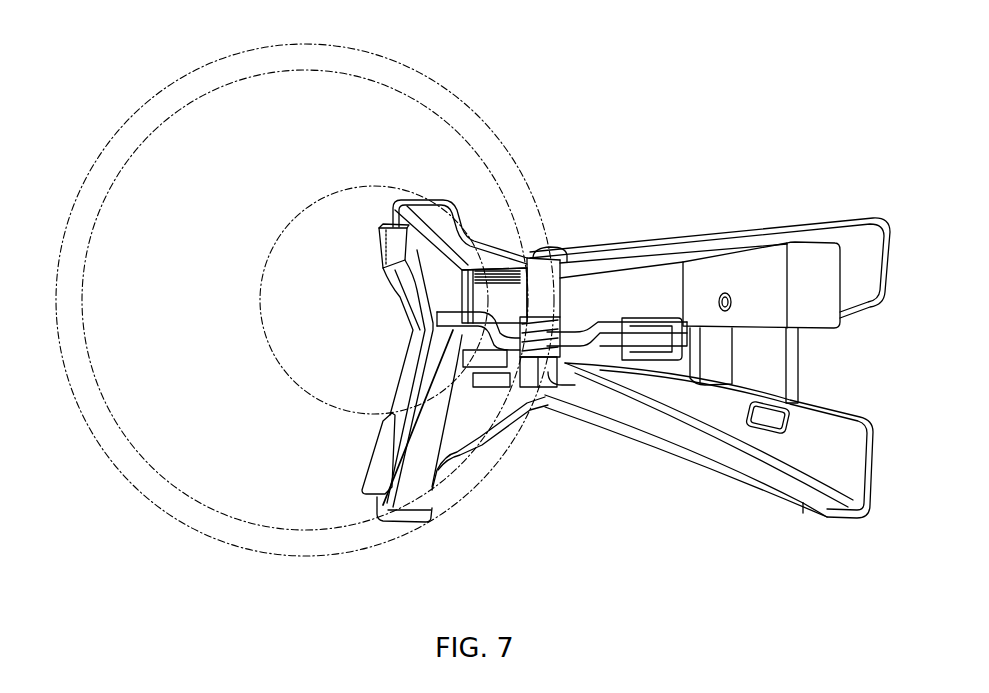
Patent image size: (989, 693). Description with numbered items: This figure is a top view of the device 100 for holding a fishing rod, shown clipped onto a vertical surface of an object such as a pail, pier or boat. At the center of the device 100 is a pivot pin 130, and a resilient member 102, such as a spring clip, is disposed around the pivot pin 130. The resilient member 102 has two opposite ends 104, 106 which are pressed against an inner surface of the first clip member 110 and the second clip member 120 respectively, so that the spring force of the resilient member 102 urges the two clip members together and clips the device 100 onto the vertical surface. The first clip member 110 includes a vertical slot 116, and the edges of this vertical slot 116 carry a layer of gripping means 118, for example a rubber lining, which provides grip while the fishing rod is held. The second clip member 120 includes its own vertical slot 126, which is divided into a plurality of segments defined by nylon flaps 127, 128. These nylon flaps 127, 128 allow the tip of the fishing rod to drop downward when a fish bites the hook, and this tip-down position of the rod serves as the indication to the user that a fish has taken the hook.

The device 100 is at (627, 107).
The resilient member 102 is at (550, 322).
The first end of resilient member 104 is at (450, 333).
The second end of resilient member 106 is at (688, 342).
The first clip member 110 is at (460, 222).
The vertical slot of first clip member 116 is at (393, 328).
The gripping means 118 is at (383, 233).
The second clip member 120 is at (732, 235).
The vertical slot of second clip member 126 is at (830, 383).
The nylon flap 127 is at (793, 362).
The nylon flap 128 is at (727, 350).
The pivot pin 130 is at (540, 380).